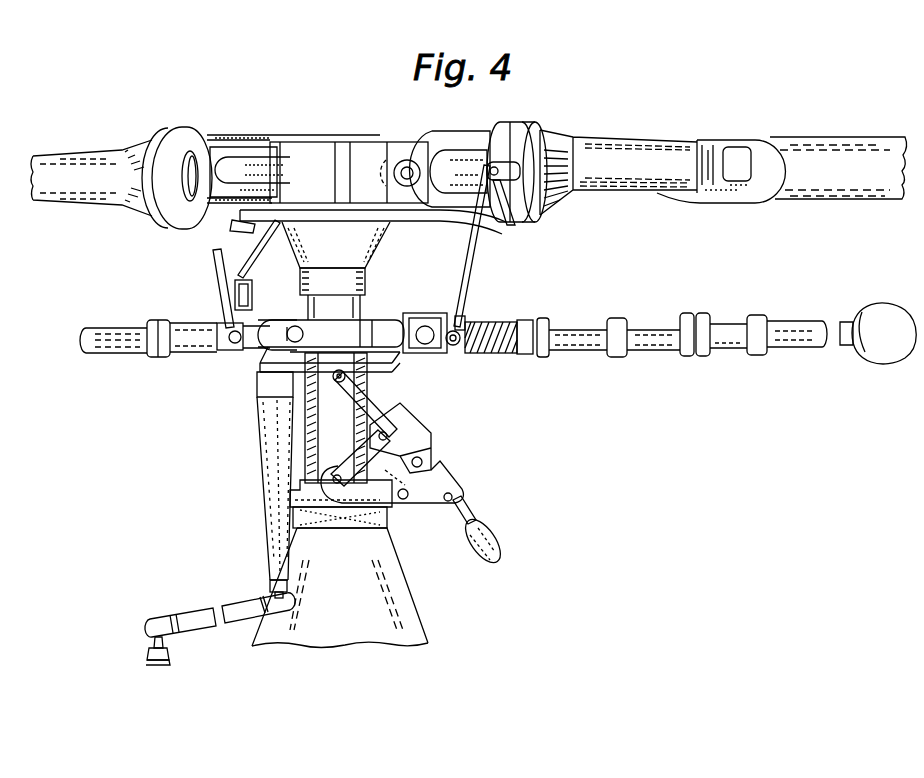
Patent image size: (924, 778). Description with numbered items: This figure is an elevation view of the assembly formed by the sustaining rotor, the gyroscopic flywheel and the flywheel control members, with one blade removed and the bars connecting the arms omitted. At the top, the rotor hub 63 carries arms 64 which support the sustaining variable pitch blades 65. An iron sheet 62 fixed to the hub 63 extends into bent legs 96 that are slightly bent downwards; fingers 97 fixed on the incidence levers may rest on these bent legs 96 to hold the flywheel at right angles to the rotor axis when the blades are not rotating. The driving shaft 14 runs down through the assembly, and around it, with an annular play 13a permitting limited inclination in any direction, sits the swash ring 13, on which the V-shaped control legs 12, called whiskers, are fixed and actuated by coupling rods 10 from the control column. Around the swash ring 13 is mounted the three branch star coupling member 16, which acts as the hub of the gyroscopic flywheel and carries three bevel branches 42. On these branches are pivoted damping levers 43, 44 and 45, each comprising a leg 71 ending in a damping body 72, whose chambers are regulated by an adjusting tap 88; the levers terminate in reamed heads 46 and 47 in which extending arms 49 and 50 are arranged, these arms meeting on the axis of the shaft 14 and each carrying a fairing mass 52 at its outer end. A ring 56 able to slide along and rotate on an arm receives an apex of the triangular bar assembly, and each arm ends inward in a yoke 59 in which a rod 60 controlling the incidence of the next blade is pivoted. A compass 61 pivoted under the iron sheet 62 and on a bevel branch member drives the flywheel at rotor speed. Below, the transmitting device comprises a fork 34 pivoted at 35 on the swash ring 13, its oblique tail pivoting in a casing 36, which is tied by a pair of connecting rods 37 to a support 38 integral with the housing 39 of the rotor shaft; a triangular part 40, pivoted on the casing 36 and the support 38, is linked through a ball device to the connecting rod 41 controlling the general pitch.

The coupling rod 10 is at (180, 615).
The control V-shaped leg 12 is at (271, 472).
The swash ring 13 is at (372, 362).
The annular play 13a is at (284, 397).
The driving shaft 14 is at (307, 432).
The three branch star coupling member 16 is at (364, 333).
The fork 34 is at (365, 405).
The pivot of fork arms 35 is at (340, 384).
The casing 36 is at (412, 430).
The connecting rods 37 is at (358, 447).
The support 38 is at (300, 494).
The housing of the rotor shaft 39 is at (383, 552).
The triangular part 40 is at (433, 477).
The connecting rod controlling the general pitch 41 is at (488, 520).
The bevel branch 42 is at (310, 333).
The lever with damping device 43 is at (505, 325).
The lever with damping device 44 is at (276, 356).
The lever with damping device 45 is at (422, 327).
The reamed head 46 is at (560, 330).
The reamed head 47 is at (190, 324).
The extending arm 49 is at (792, 333).
The extending arm 50 is at (100, 328).
The fairing mass 52 is at (893, 355).
The ring 56 is at (727, 333).
The yoke 59 is at (292, 320).
The rod controlling incidence 60 is at (228, 306).
The compass 61 is at (257, 257).
The iron sheet 62 is at (342, 221).
The hub 63 is at (312, 155).
The arm 64 is at (83, 163).
The sustaining variable pitch blade 65 is at (806, 153).
The leg 71 is at (237, 344).
The damping body 72 is at (312, 300).
The adjusting tap 88 is at (462, 320).
The bent leg 96 is at (452, 223).
The finger 97 is at (500, 222).